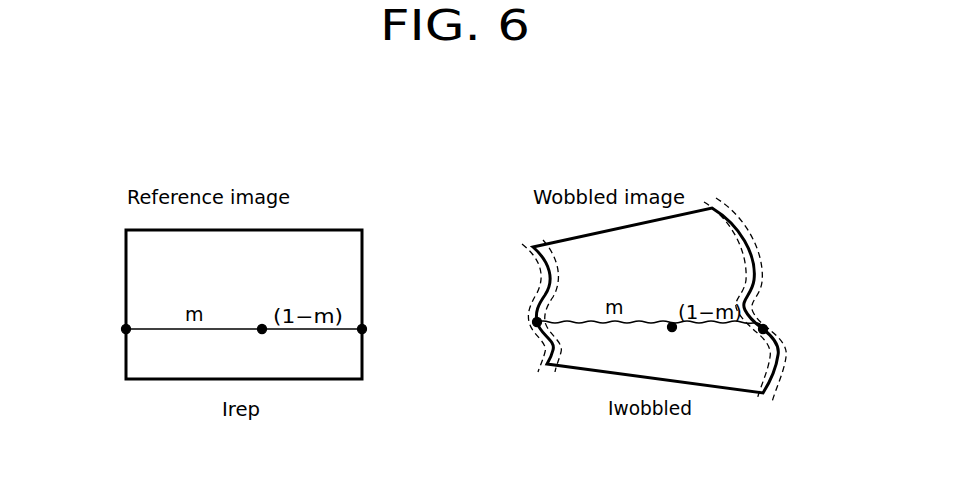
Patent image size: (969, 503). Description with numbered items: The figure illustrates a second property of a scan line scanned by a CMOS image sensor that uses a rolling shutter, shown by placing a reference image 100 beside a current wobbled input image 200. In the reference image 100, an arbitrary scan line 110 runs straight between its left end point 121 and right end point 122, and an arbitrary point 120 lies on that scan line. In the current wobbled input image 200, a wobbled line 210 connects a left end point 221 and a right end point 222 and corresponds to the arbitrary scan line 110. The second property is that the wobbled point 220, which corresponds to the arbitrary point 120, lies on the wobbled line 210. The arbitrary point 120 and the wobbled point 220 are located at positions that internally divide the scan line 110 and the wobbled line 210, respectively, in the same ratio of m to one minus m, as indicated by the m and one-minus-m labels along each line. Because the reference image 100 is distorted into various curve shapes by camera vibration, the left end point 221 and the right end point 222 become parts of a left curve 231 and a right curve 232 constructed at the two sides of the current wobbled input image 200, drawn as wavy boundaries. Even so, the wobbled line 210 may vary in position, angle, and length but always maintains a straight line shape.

The reference image 100 is at (310, 230).
The arbitrary scan line I_ref 110 is at (167, 330).
The point P_R 120 is at (265, 370).
The end point P_R,left 121 is at (126, 329).
The end point P_R,right 122 is at (362, 329).
The current wobbled input image 200 is at (725, 212).
The line I_wobbled 210 is at (595, 325).
The point P_W 220 is at (675, 365).
The end point P_W,left 221 is at (537, 322).
The end point P_W,right 222 is at (763, 329).
The curve 231 is at (530, 243).
The curve 232 is at (715, 200).